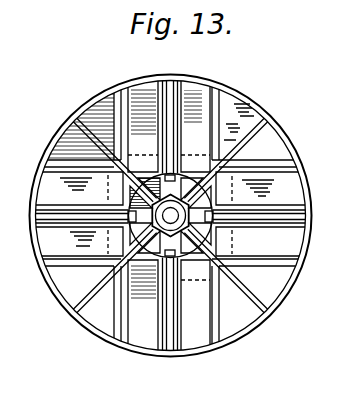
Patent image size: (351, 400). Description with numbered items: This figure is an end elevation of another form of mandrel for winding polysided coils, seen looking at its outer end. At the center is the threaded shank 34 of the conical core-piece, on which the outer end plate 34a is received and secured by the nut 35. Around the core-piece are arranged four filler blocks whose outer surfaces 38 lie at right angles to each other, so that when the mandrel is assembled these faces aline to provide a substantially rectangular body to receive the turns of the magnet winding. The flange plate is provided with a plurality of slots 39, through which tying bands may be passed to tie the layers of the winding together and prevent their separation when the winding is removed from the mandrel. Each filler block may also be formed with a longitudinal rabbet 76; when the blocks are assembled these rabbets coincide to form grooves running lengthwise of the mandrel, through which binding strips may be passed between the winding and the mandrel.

The threaded shank 34 is at (170, 214).
The outer end plate 34a is at (288, 144).
The nut 35 is at (157, 221).
The outer surfaces 38 is at (190, 292).
The slots 39 is at (133, 70).
The longitudinal rabbet 76 is at (243, 207).